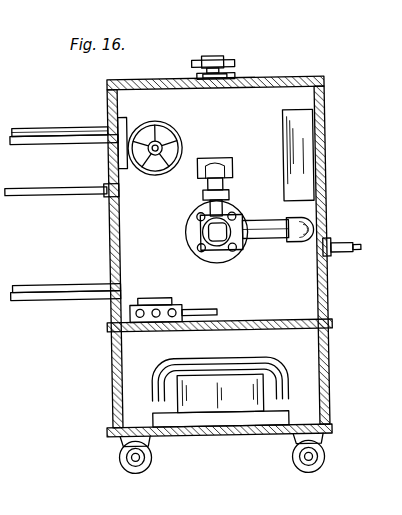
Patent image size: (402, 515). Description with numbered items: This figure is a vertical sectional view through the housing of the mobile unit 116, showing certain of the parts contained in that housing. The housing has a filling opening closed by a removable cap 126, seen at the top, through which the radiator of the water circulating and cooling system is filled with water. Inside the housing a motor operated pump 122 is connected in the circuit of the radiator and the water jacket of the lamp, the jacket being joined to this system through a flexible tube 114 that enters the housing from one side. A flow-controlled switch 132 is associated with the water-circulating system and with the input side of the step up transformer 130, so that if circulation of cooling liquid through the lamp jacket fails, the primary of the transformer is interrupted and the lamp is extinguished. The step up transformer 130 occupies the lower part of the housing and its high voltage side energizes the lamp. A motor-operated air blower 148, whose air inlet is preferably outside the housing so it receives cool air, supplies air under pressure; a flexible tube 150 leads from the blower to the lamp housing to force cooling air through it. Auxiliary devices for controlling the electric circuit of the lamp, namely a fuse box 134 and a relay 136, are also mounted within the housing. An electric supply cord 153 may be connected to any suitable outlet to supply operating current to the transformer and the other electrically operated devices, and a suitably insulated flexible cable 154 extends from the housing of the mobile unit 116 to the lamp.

The mobile unit 116 is at (287, 70).
The removable cap 126 is at (218, 60).
The flexible tube 150 is at (66, 126).
The motor-operated air blower 148 is at (159, 175).
The insulated flexible cable 154 is at (68, 200).
The flexible tube 114 is at (62, 302).
The flow-controlled switch 132 is at (217, 158).
The motor operated pump 122 is at (186, 232).
The relay 136 is at (320, 172).
The electric supply cord 153 is at (342, 258).
The fuse box 134 is at (181, 307).
The step up transformer 130 is at (225, 398).